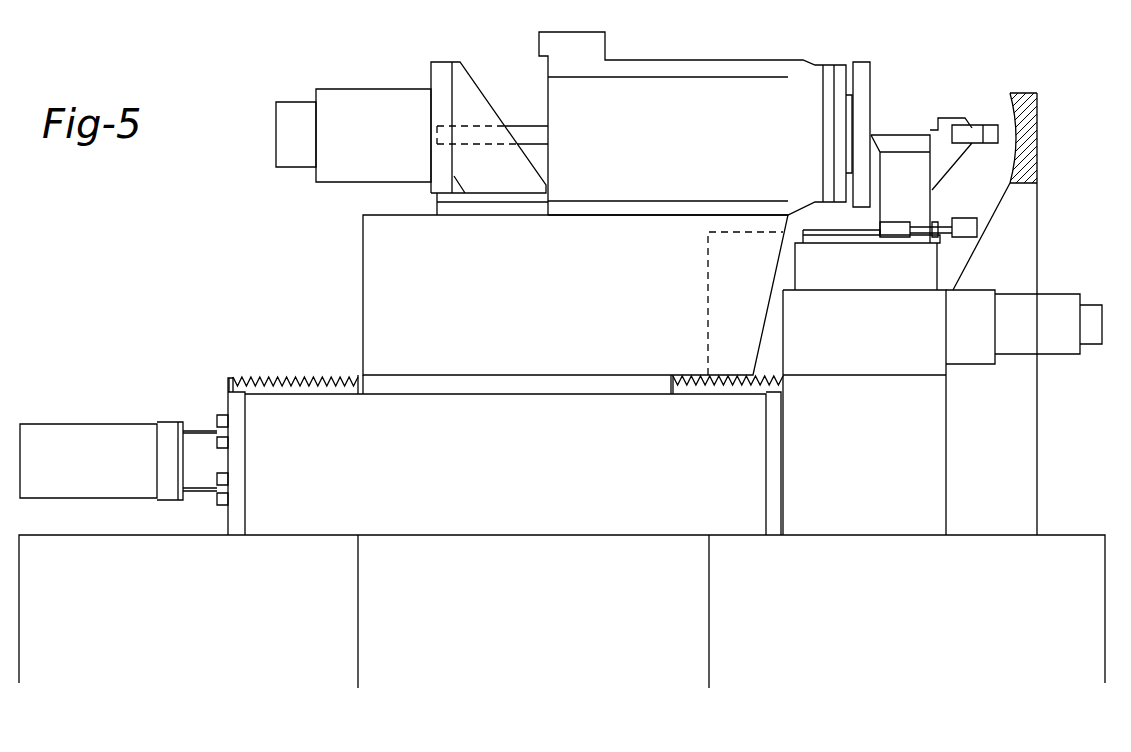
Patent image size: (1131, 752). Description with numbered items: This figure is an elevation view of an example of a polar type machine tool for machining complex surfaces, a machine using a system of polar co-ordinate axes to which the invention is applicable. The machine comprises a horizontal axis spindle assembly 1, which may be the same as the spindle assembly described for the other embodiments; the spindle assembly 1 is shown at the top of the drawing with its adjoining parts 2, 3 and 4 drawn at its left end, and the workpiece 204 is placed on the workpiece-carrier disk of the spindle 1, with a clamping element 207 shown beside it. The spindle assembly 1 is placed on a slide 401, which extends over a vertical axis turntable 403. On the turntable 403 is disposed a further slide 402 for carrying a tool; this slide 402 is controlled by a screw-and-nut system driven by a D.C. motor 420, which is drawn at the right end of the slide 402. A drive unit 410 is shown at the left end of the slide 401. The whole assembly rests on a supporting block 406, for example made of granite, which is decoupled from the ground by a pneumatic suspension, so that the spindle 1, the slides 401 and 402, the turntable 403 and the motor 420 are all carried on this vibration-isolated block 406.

The horizontal axis spindle assembly 1 is at (703, 52).
The drive motor 2 is at (365, 100).
The support bracket 3 is at (511, 108).
The motor end cap 4 is at (287, 107).
The workpiece 204 is at (865, 70).
The clamping block 207 is at (897, 137).
The slide 401 is at (495, 392).
The slide 402 is at (980, 302).
The vertical axis turntable 403 is at (857, 244).
The supporting block 406 is at (1058, 548).
The drive motor 410 is at (80, 440).
The D.C. motor 420 is at (1058, 305).